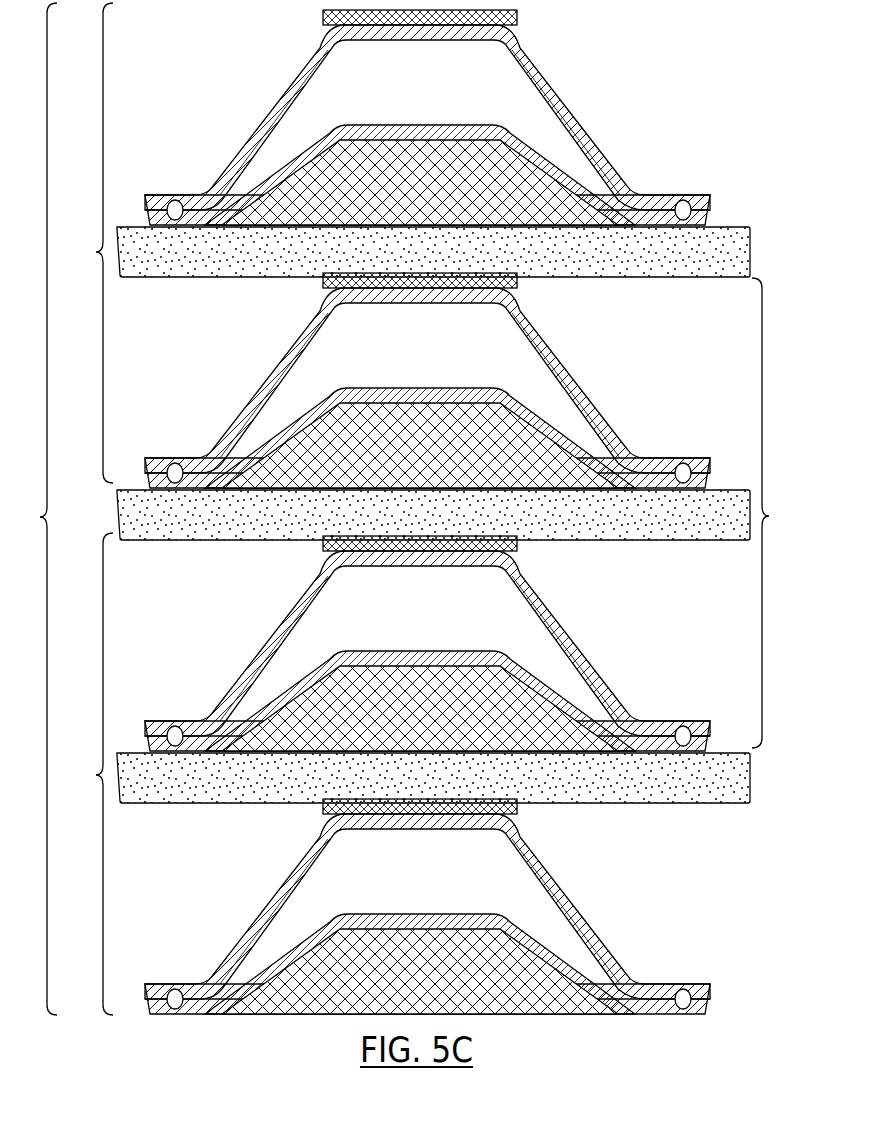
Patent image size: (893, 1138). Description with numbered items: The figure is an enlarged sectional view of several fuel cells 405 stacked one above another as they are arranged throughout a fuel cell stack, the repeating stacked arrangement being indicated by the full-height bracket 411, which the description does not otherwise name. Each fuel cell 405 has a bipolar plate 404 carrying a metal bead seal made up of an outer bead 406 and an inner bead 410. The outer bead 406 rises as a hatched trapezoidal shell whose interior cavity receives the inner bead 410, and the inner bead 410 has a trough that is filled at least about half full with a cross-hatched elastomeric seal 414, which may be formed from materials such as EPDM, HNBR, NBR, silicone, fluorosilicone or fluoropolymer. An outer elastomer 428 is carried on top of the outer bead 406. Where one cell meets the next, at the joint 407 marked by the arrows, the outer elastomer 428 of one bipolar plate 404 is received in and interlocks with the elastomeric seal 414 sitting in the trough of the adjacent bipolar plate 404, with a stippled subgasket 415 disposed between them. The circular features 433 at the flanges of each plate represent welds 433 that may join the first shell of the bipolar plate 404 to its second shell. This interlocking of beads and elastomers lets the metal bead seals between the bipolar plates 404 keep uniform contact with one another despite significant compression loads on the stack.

The bipolar plate 404 is at (433, 512).
The fuel cell 405 is at (432, 509).
The outer bead 406 is at (583, 106).
The joint 407 is at (180, 325).
The inner bead 410 is at (285, 432).
The cell stack 411 is at (32, 509).
The elastomeric seal 414 is at (392, 162).
The subgasket 415 is at (718, 266).
The outer elastomer 428 is at (325, 17).
The weld 433 is at (170, 204).